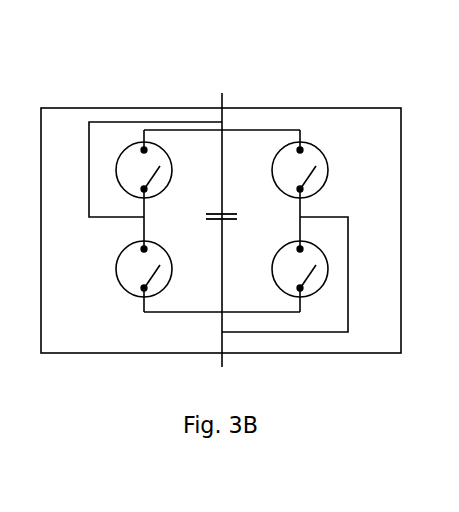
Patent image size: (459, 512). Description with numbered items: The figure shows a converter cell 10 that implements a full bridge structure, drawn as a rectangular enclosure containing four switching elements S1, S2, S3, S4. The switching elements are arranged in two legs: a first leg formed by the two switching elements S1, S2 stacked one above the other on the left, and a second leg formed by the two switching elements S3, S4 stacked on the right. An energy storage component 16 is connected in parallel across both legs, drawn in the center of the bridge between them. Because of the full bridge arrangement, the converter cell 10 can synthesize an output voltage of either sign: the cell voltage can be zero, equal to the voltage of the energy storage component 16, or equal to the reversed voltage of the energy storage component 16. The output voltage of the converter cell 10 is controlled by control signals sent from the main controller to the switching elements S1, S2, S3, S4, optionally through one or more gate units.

The converter cell 10 is at (288, 108).
The energy storage component 16 is at (237, 216).
The switching element S1 is at (172, 170).
The switching element S2 is at (172, 267).
The switching element S3 is at (328, 167).
The switching element S4 is at (338, 246).